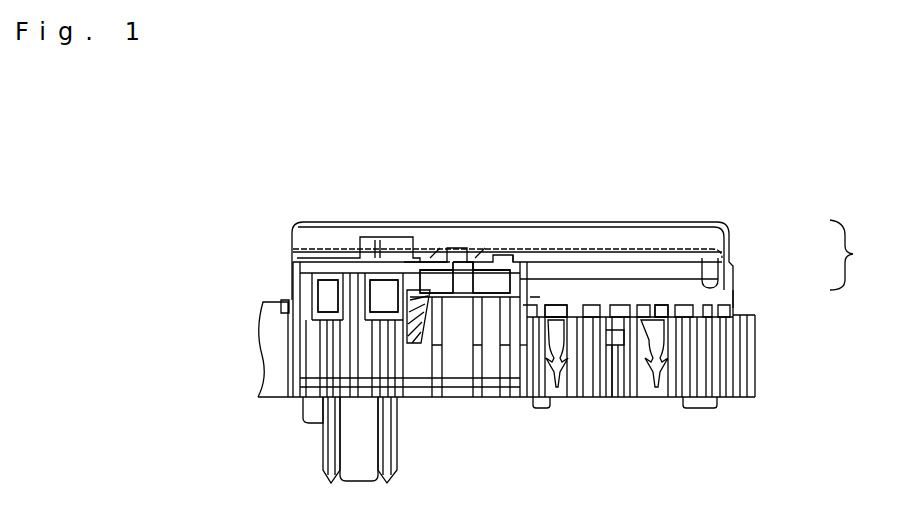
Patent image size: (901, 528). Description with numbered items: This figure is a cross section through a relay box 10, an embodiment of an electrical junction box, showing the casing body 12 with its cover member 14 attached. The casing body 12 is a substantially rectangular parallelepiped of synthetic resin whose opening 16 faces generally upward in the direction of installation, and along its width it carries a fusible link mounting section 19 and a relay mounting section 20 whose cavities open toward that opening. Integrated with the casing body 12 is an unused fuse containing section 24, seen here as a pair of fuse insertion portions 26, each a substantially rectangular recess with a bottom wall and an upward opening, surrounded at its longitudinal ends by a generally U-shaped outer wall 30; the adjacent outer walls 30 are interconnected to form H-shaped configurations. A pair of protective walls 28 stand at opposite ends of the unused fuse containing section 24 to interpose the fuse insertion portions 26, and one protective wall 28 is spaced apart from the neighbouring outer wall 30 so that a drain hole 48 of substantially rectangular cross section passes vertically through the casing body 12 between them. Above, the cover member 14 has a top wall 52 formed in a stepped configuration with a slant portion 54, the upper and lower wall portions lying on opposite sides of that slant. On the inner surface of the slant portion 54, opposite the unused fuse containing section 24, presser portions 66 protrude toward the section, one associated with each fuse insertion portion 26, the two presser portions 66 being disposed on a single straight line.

The relay box 10 is at (858, 255).
The casing body 12 is at (763, 307).
The cover member 14 is at (742, 259).
The opening 16 is at (705, 307).
The fusible link mounting section 19 is at (345, 292).
The relay mounting section 20 is at (572, 310).
The unused fuse containing section 24 is at (508, 251).
The fuse insertion portion 26 is at (432, 255).
The protective wall 28 is at (404, 262).
The outer wall 30 is at (439, 345).
The drain hole 48 is at (519, 345).
The top wall 52 is at (463, 266).
The slant portion 54 is at (462, 300).
The presser portion 66 is at (428, 288).